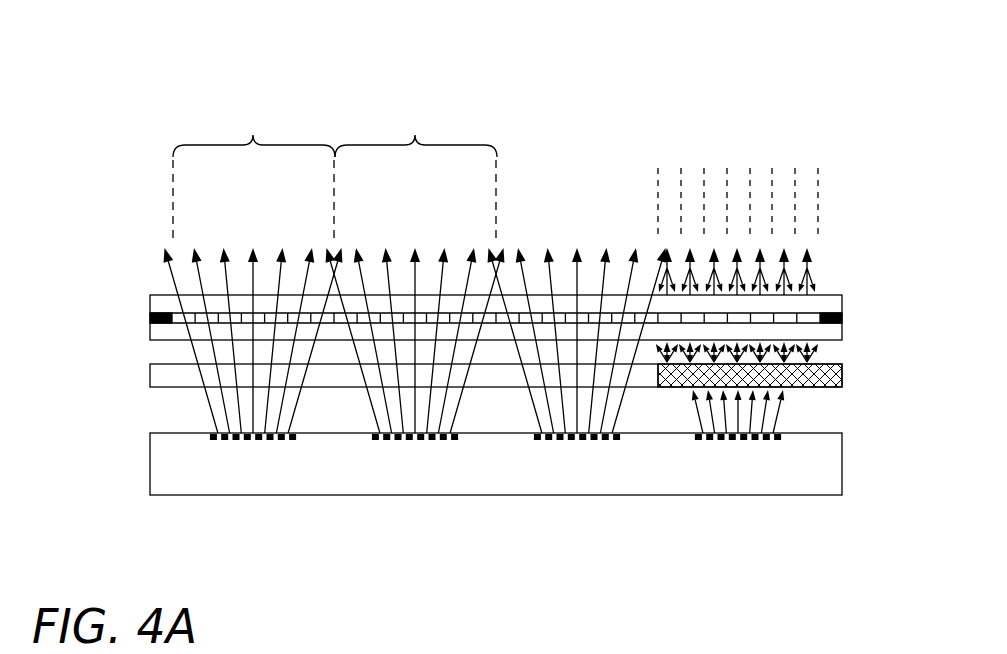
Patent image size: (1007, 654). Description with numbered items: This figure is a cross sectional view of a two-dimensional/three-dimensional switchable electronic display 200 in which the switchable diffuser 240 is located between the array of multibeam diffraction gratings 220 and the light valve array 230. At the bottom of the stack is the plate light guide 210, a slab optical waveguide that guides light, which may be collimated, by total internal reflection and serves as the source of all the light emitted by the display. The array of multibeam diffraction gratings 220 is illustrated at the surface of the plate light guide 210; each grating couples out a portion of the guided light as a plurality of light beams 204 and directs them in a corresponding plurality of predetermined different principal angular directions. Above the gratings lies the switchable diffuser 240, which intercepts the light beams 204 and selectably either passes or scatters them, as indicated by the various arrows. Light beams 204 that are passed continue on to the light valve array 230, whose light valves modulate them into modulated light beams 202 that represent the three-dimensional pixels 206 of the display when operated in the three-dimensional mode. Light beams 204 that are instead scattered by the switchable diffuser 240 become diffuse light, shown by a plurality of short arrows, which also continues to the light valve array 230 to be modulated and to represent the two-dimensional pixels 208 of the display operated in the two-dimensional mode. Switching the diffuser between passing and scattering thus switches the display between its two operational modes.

The 2D/3D switchable electronic display 200 is at (818, 63).
The modulated light beams 202 is at (150, 272).
The light beams 204 is at (171, 410).
The 3-D pixels 206 is at (335, 168).
The 2-D pixels 208 is at (809, 166).
The plate light guide 210 is at (842, 465).
The multibeam diffraction gratings 220 is at (245, 466).
The light valve array 230 is at (150, 318).
The switchable diffuser 240 is at (843, 375).